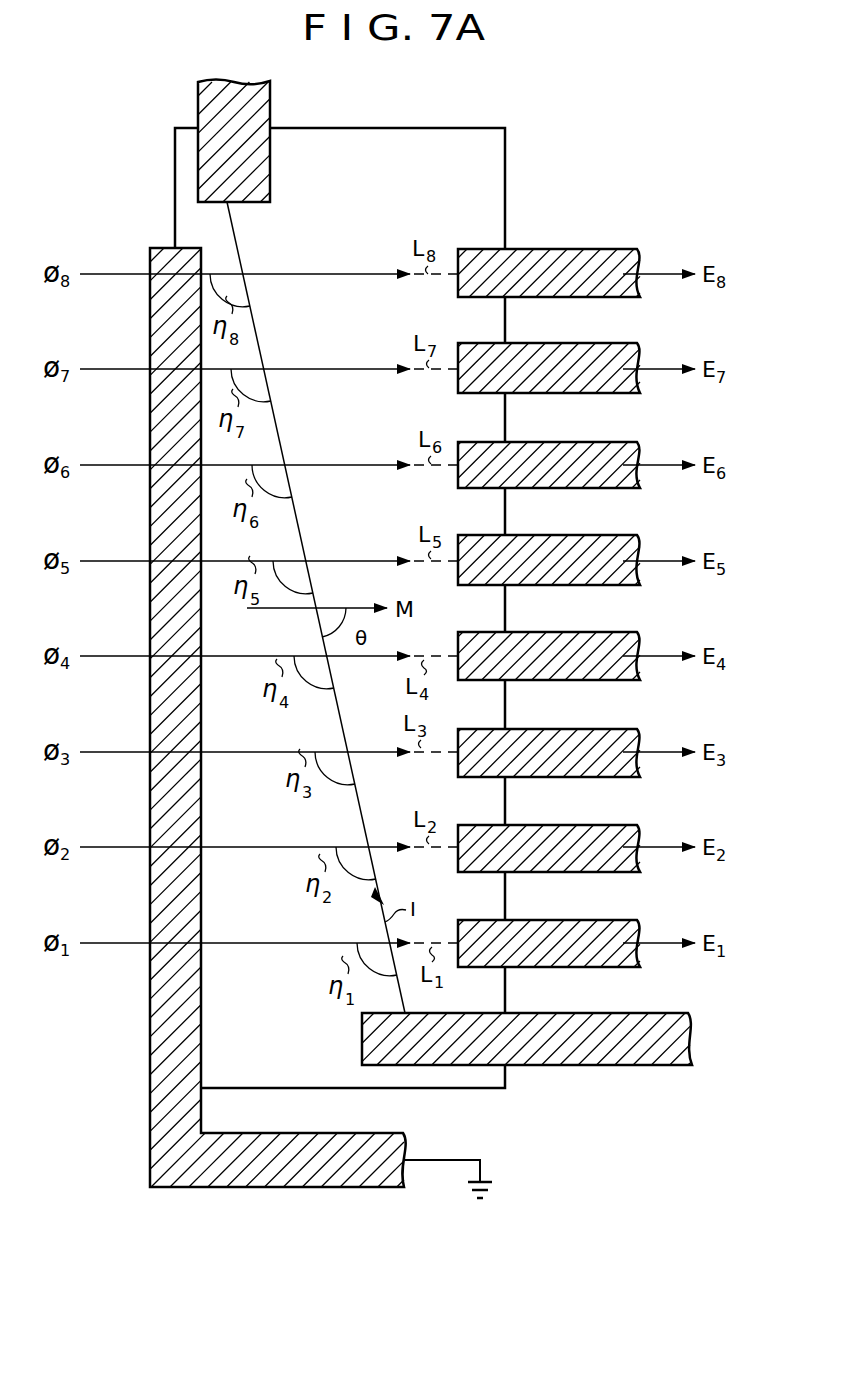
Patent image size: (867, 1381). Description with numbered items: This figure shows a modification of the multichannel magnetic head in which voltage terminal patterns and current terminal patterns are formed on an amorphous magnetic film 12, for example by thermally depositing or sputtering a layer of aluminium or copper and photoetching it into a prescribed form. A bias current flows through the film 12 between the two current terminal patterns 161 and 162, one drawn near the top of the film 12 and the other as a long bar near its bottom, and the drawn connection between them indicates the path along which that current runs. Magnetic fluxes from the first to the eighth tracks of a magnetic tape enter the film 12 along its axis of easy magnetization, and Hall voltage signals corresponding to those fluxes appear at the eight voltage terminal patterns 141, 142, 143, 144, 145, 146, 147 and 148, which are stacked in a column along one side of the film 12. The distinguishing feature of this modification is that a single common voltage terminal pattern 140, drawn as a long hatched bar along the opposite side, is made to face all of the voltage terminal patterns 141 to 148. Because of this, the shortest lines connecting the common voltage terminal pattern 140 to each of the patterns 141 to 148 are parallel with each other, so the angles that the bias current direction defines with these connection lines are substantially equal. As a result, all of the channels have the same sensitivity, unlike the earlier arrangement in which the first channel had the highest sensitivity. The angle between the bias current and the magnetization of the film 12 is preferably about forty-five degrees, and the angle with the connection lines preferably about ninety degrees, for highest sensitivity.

The amorphous magnetic film 12 is at (439, 131).
The common voltage terminal pattern 140 is at (352, 1142).
The voltage terminal pattern 141 is at (564, 925).
The voltage terminal pattern 142 is at (564, 829).
The voltage terminal pattern 143 is at (564, 734).
The voltage terminal pattern 144 is at (564, 638).
The voltage terminal pattern 145 is at (564, 543).
The voltage terminal pattern 146 is at (564, 447).
The voltage terminal pattern 147 is at (564, 351).
The voltage terminal pattern 148 is at (564, 256).
The current terminal pattern 161 is at (233, 95).
The current terminal pattern 162 is at (602, 1066).